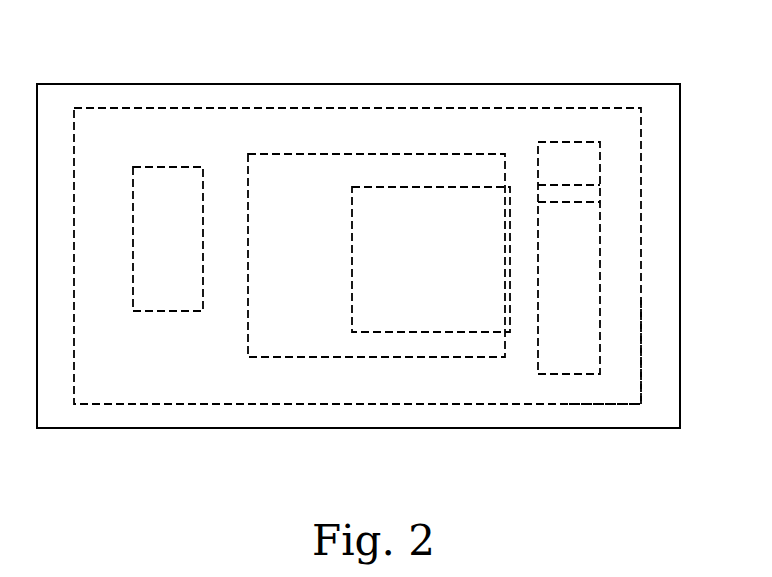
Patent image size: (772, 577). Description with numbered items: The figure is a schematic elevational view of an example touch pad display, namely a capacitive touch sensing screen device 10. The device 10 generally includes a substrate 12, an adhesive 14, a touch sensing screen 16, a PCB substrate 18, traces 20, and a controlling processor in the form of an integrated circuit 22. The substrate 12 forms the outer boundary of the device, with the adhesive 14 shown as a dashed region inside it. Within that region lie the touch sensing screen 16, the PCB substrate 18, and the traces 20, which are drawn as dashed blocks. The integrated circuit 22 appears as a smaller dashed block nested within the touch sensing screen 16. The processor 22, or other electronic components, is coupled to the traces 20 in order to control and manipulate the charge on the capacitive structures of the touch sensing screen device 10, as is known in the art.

The capacitive touch sensing screen device 10 is at (708, 86).
The substrate 12 is at (662, 90).
The adhesive 14 is at (611, 107).
The touch sensing screen 16 is at (248, 336).
The PCB substrate 18 is at (641, 382).
The traces 20 is at (148, 311).
The integrated circuit 22 is at (352, 264).